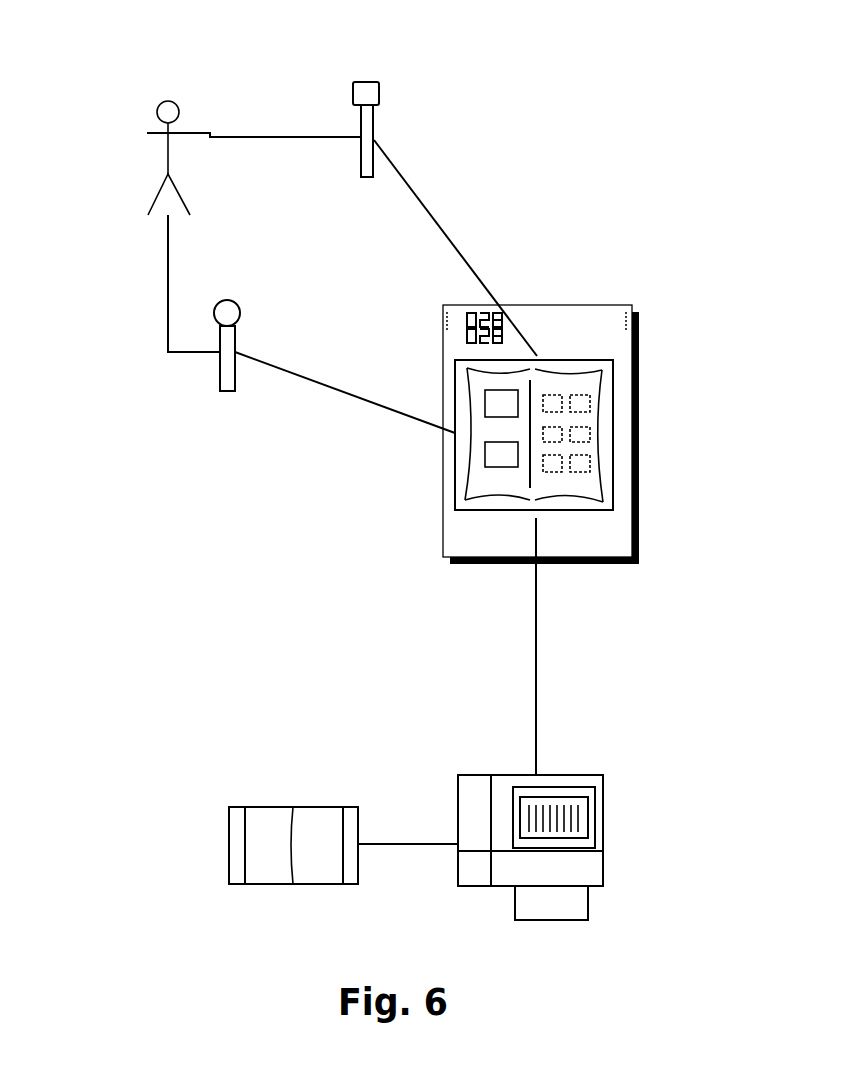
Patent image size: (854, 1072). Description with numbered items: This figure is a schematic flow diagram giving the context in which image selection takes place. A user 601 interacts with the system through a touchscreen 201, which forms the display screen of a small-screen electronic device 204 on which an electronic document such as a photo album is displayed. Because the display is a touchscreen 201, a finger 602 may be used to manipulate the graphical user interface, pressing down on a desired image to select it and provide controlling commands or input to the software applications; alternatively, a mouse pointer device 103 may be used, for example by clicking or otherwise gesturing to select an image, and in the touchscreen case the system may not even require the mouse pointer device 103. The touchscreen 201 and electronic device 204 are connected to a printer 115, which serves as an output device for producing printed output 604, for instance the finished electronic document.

The user 601 is at (157, 200).
The finger 602 is at (379, 92).
The mouse pointer device 103 is at (227, 392).
The touchscreen 201 is at (543, 468).
The small-screen electronic device 204 is at (485, 537).
The printer 115 is at (587, 797).
The printed output 604 is at (228, 816).